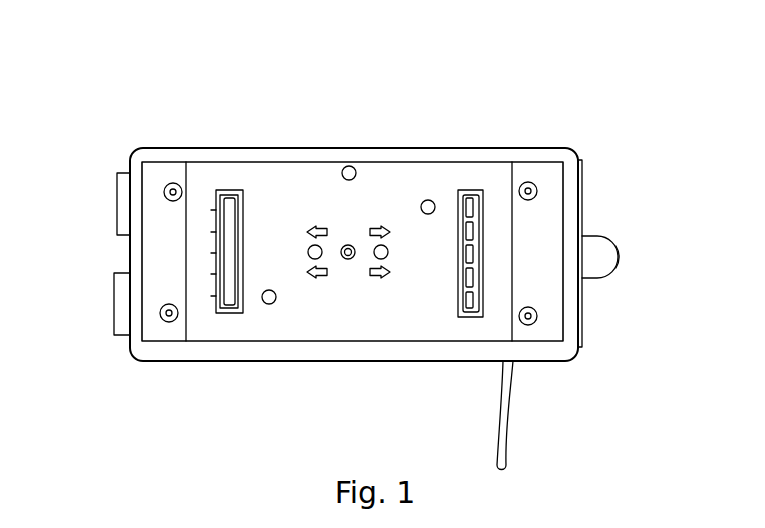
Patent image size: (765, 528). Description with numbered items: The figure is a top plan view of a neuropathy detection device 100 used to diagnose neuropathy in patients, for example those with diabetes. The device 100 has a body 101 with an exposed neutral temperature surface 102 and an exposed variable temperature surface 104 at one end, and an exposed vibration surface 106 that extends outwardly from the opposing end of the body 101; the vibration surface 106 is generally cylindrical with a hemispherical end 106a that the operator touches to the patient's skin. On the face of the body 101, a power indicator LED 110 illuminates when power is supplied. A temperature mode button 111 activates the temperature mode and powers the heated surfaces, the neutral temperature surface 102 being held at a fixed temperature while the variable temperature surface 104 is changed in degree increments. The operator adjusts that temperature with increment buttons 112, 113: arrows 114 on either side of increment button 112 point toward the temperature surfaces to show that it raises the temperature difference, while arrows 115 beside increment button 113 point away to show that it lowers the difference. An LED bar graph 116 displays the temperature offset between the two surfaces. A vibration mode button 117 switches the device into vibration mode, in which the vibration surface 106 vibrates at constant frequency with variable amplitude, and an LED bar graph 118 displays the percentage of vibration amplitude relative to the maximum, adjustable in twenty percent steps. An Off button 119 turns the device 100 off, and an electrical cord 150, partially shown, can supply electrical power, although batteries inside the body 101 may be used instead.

The neuropathy detection device 100 is at (375, 57).
The body 101 is at (138, 134).
The neutral temperature surface 102 is at (113, 321).
The variable temperature surface 104 is at (117, 203).
The vibration surface 106 is at (607, 237).
The end of vibration surface 106a is at (619, 255).
The power indicator LED 110 is at (348, 259).
The temperature mode button 111 is at (268, 305).
The increment button 112 is at (310, 246).
The increment button 113 is at (388, 256).
The arrows 114 is at (310, 229).
The arrows 115 is at (378, 227).
The LED bar graph 116 is at (230, 307).
The vibration mode button 117 is at (432, 203).
The LED bar graph 118 is at (476, 190).
The Off button 119 is at (349, 166).
The electrical cord 150 is at (513, 408).